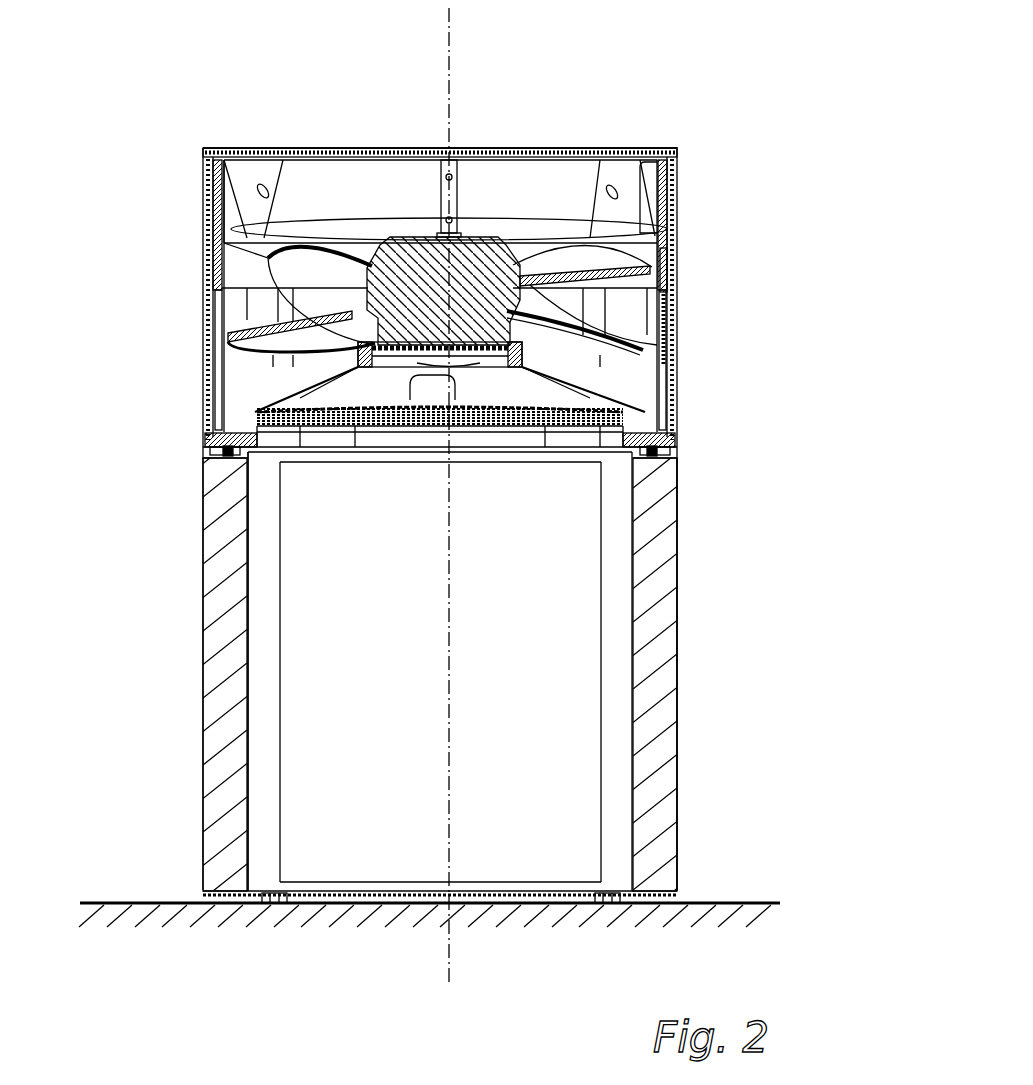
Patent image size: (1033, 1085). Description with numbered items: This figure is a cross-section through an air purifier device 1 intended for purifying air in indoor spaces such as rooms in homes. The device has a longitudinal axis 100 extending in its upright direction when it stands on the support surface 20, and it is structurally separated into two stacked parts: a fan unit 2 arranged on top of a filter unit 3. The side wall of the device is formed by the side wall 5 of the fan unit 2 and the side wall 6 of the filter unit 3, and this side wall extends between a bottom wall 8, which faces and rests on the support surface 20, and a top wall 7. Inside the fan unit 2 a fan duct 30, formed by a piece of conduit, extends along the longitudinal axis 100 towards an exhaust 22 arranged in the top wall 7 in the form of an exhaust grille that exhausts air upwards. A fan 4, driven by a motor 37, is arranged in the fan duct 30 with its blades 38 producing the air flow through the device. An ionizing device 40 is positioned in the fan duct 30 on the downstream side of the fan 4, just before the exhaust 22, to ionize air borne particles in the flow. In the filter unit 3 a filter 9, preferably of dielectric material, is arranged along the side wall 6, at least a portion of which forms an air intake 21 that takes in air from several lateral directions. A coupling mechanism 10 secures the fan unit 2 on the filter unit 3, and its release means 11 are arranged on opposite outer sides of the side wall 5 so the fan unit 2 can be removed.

The air purifier device 1 is at (688, 108).
The fan unit 2 is at (202, 313).
The filter unit 3 is at (200, 776).
The fan 4 is at (358, 248).
The side wall of the fan unit 5 is at (203, 196).
The side wall of the filter unit 6 is at (203, 578).
The top wall 7 is at (527, 148).
The bottom wall 8 is at (533, 896).
The filter 9 is at (218, 703).
The coupling mechanism 10 is at (188, 433).
The release means 11 is at (203, 445).
The support surface 20 is at (730, 903).
The air intake 21 is at (677, 600).
The exhaust 22 is at (288, 150).
The fan duct 30 is at (613, 232).
The motor 37 is at (462, 233).
The blades 38 is at (323, 243).
The ionizing device 40 is at (268, 176).
The longitudinal axis 100 is at (449, 27).